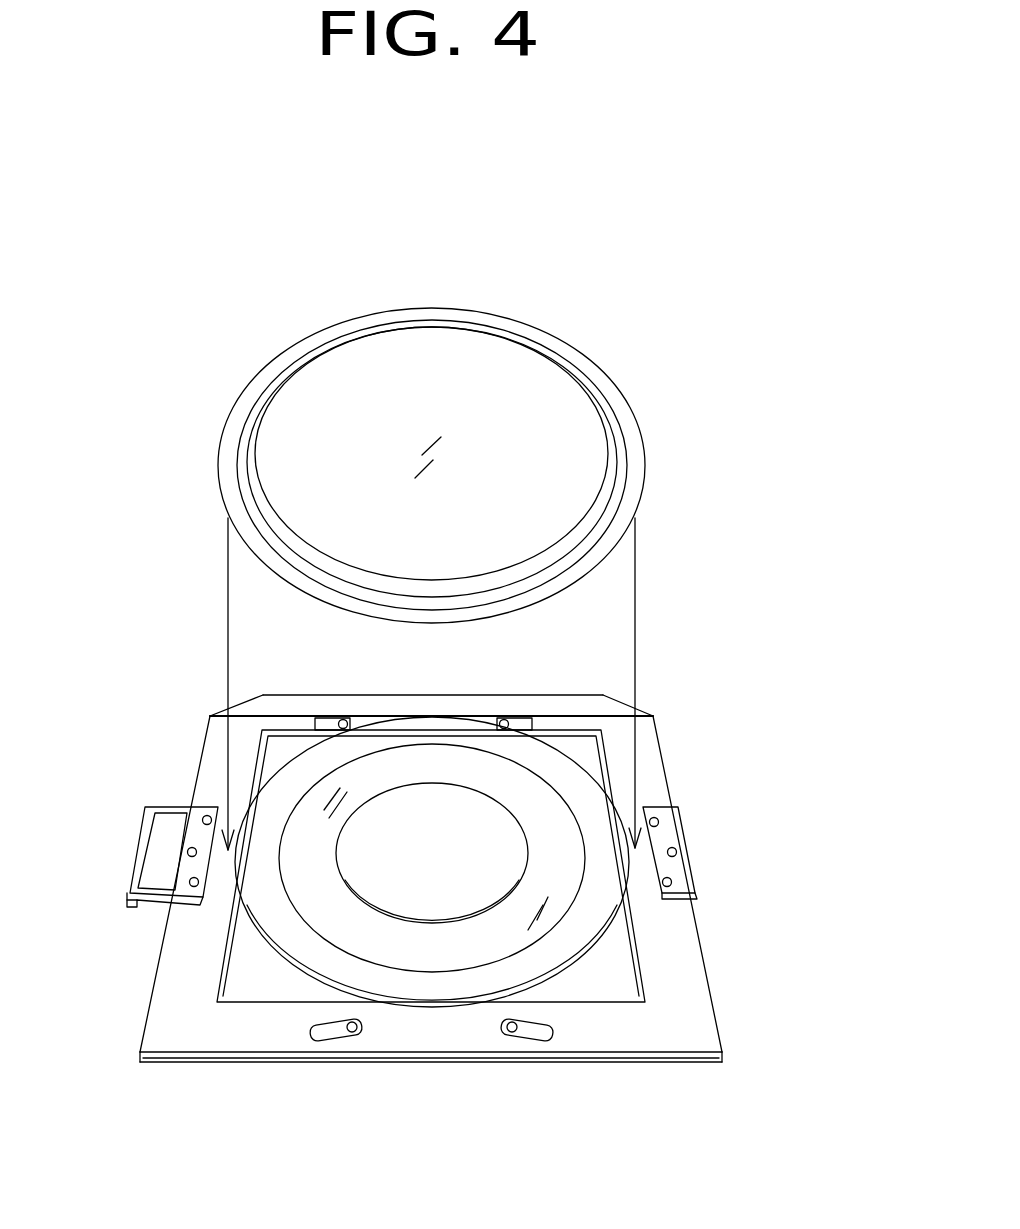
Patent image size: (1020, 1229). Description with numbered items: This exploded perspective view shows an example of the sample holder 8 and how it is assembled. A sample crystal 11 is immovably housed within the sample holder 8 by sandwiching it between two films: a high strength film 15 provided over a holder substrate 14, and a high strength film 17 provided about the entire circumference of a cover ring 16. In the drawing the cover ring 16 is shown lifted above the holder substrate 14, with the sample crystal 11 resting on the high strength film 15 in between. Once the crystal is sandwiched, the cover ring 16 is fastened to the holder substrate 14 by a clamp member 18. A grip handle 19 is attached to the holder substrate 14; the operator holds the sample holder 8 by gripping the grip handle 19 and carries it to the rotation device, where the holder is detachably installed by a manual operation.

The sample holder 8 is at (186, 595).
The sample crystal 11 is at (483, 856).
The holder substrate 14 is at (688, 988).
The high strength film 15 is at (570, 878).
The cover ring 16 is at (620, 430).
The high strength film 17 is at (490, 360).
The clamp member 18 is at (517, 727).
The grip handle 19 is at (140, 845).